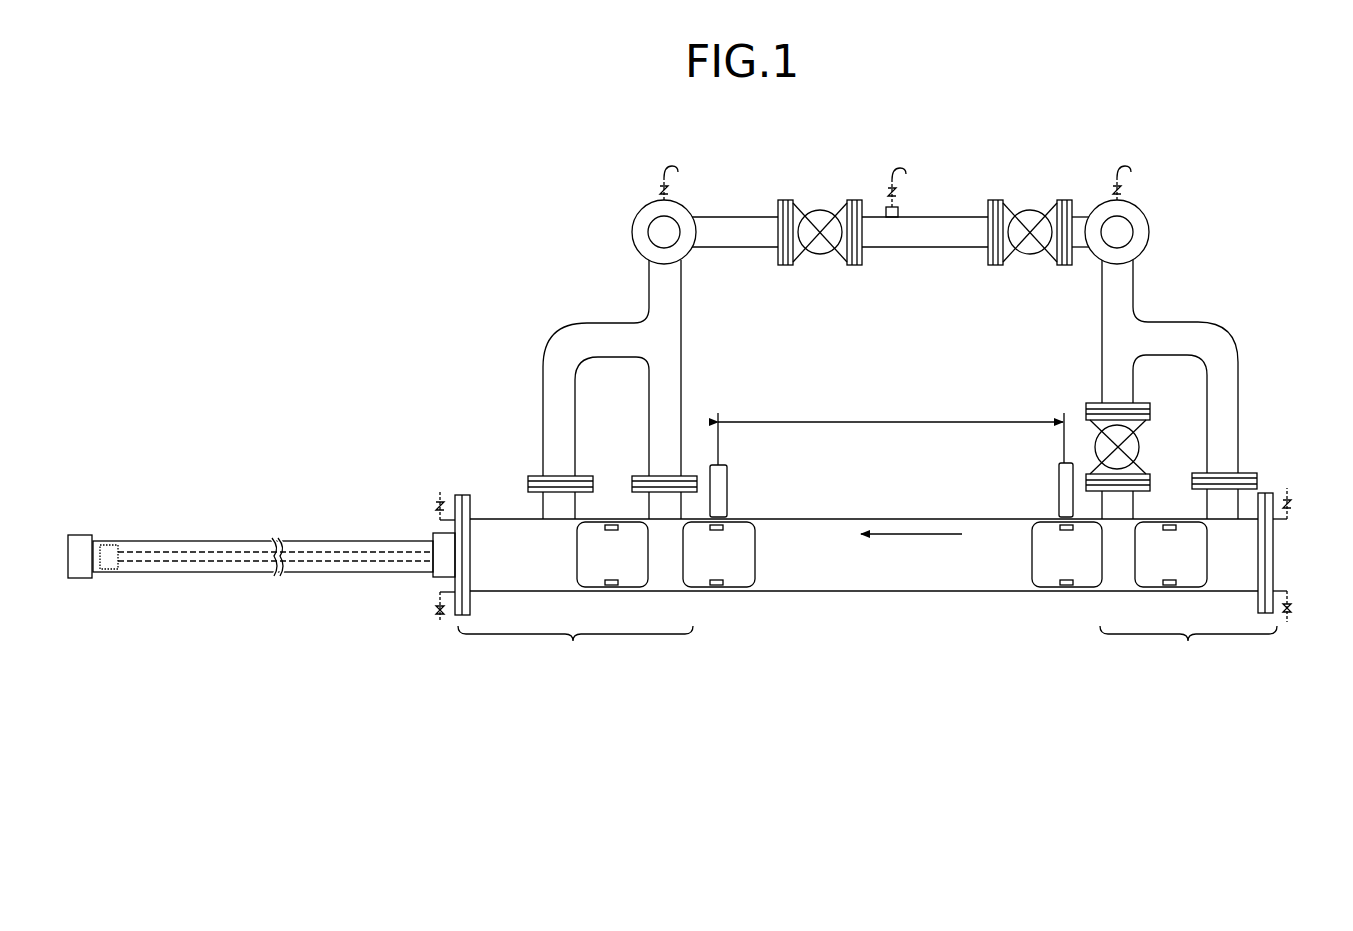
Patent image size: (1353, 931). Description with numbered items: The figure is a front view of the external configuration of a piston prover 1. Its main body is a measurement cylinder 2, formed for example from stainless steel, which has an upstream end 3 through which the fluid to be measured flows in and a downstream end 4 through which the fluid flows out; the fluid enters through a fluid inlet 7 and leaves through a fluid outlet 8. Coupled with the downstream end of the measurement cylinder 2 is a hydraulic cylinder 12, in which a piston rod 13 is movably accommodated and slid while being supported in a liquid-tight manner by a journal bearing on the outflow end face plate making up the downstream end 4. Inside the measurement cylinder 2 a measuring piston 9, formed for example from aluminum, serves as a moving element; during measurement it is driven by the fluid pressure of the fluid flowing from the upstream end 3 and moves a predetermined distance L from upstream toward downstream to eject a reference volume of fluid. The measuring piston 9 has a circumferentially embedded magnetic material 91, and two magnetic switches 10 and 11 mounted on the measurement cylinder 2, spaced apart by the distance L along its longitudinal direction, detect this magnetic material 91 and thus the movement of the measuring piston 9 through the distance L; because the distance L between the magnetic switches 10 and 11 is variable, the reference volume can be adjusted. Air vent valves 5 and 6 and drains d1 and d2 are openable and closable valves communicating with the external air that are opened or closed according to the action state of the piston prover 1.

The piston prover 1 is at (486, 172).
The measurement cylinder 2 is at (905, 518).
The upstream end 3 is at (1154, 594).
The downstream end 4 is at (606, 594).
The air vent valve 5 is at (1290, 488).
The air vent valve 6 is at (440, 490).
The fluid inlet 7 is at (1134, 234).
The fluid outlet 8 is at (650, 236).
The measuring piston 9 is at (1207, 580).
The magnetic material 91 is at (1165, 506).
The magnetic switch 10 is at (1058, 490).
The magnetic switch 11 is at (728, 483).
The hydraulic cylinder 12 is at (327, 540).
The piston rod 13 is at (218, 578).
The predetermined distance L is at (891, 431).
The drain d1 is at (1290, 594).
The drain d2 is at (437, 596).